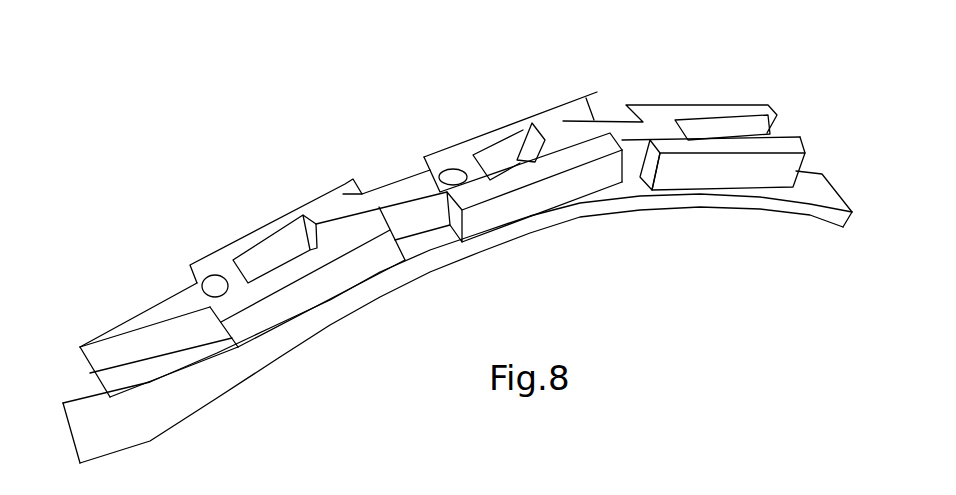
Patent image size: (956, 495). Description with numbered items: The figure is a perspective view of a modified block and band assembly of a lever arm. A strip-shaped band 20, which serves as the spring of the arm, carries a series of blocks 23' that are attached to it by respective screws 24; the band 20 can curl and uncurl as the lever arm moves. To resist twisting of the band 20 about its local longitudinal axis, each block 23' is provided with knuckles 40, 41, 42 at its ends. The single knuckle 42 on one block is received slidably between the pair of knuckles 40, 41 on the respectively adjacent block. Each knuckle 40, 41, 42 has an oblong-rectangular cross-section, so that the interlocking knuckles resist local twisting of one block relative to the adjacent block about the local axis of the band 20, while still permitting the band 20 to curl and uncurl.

The band 20 is at (212, 368).
The block 23' is at (307, 303).
The screw 24 is at (215, 287).
The knuckle 40 is at (127, 375).
The knuckle 41 is at (320, 194).
The knuckle 42 is at (343, 213).